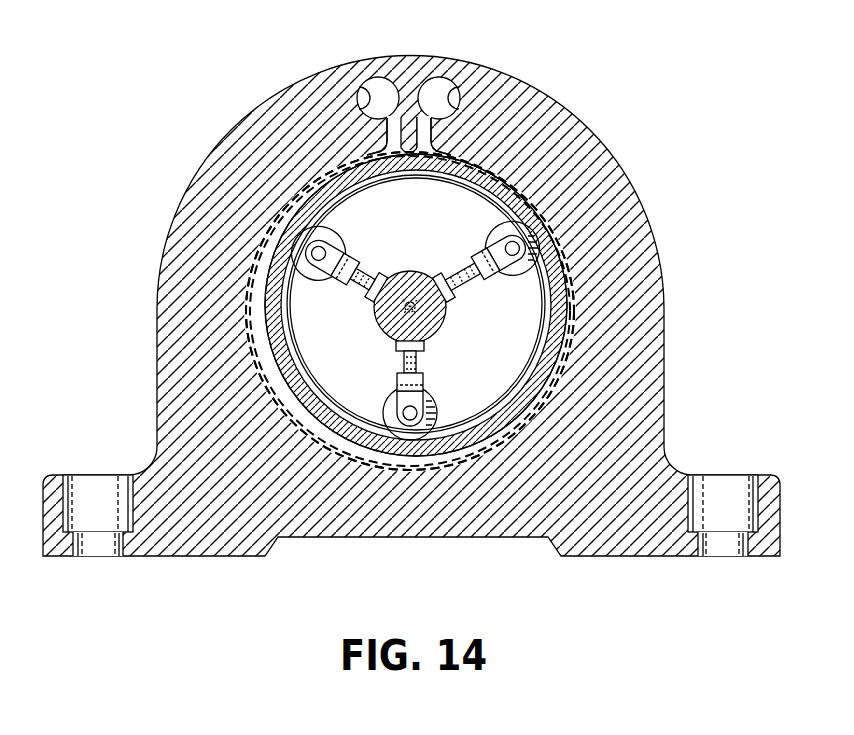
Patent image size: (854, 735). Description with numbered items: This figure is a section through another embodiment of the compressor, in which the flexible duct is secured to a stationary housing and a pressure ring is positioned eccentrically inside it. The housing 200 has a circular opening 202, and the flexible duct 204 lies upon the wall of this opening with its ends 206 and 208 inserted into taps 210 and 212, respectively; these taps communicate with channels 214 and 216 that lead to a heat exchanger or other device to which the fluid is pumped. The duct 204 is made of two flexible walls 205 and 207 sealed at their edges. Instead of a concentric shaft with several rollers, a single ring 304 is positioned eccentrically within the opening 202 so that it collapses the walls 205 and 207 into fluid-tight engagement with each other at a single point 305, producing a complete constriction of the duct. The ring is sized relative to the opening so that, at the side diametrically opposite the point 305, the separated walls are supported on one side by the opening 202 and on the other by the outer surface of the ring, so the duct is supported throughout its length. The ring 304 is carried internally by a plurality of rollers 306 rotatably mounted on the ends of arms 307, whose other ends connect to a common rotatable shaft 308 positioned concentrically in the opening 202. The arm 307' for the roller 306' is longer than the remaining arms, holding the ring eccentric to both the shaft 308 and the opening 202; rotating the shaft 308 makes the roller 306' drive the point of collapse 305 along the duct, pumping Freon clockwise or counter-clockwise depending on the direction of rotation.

The housing 200 is at (648, 358).
The circular opening 202 is at (526, 417).
The flexible duct 204 is at (298, 412).
The flexible wall 205 is at (571, 265).
The duct end 206 is at (386, 134).
The flexible wall 207 is at (567, 283).
The duct end 208 is at (430, 133).
The tap 210 is at (400, 118).
The tap 212 is at (420, 121).
The channel 214 is at (358, 100).
The channel 216 is at (455, 97).
The ring 304 is at (307, 389).
The point of collapse 305 is at (544, 227).
The roller 306 is at (341, 328).
The roller 306' is at (513, 263).
The arm 307 is at (401, 308).
The arm 307' is at (456, 263).
The rotatable shaft 308 is at (378, 324).